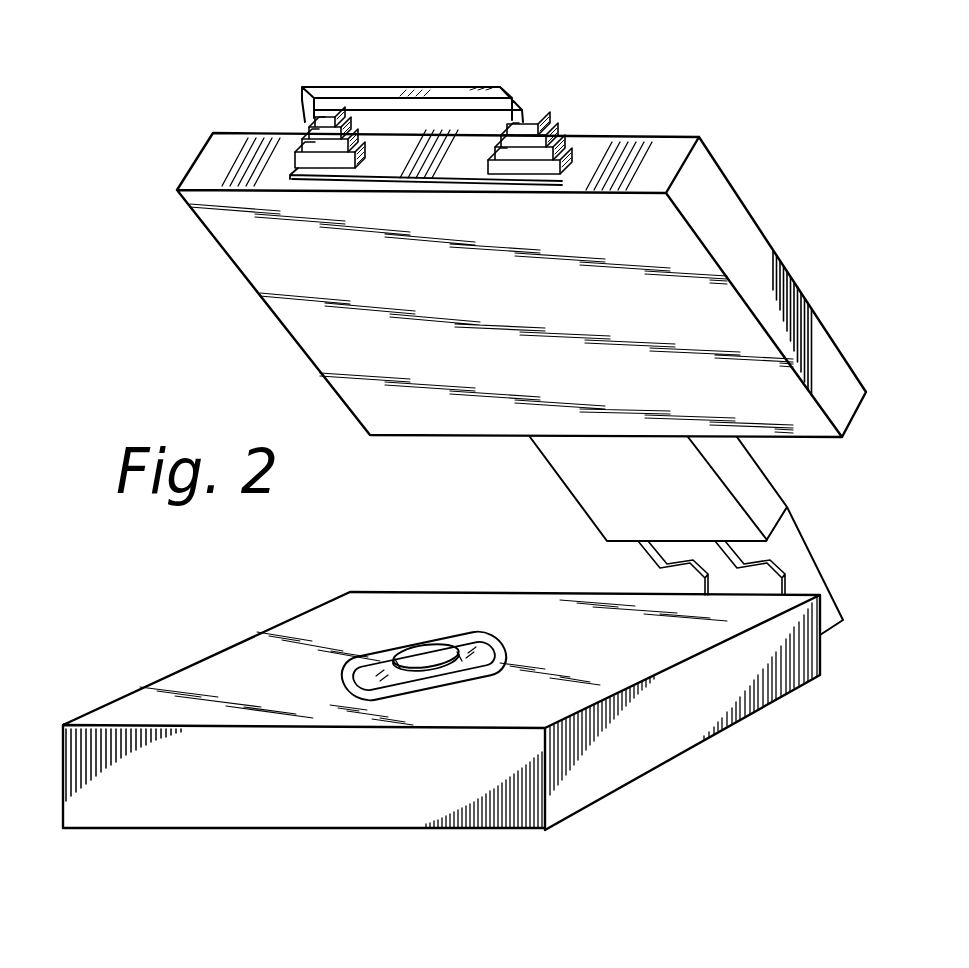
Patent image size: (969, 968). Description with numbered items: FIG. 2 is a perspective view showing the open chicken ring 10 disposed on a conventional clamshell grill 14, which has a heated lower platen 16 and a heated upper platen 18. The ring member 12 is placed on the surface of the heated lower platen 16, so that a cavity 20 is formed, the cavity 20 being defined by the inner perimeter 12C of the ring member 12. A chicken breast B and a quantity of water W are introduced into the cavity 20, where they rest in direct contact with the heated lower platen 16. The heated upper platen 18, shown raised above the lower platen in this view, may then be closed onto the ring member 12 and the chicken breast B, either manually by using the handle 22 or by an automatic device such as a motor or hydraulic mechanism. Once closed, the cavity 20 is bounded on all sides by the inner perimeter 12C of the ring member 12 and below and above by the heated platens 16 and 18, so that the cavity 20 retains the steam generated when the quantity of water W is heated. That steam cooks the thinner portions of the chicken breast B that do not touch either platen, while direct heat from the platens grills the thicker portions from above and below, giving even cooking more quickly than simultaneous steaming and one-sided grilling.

The open chicken ring 10 is at (441, 688).
The ring member 12 is at (419, 688).
The inner perimeter 12C is at (477, 648).
The clamshell grill 14 is at (521, 317).
The heated lower platen 16 is at (207, 688).
The heated upper platen 18 is at (580, 148).
The cavity 20 is at (372, 680).
The handle 22 is at (392, 93).
The quantity of water W is at (412, 677).
The chicken breast B is at (438, 657).